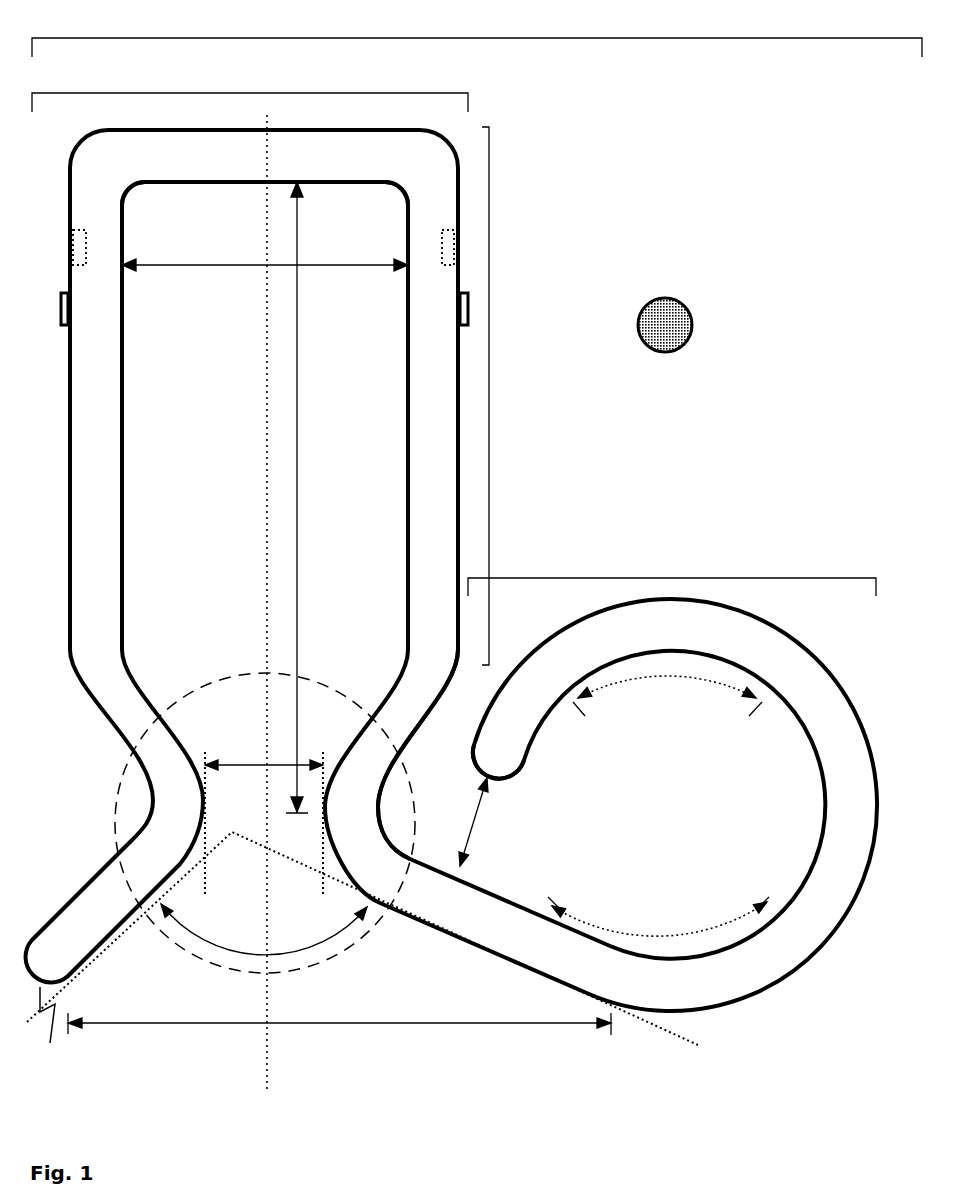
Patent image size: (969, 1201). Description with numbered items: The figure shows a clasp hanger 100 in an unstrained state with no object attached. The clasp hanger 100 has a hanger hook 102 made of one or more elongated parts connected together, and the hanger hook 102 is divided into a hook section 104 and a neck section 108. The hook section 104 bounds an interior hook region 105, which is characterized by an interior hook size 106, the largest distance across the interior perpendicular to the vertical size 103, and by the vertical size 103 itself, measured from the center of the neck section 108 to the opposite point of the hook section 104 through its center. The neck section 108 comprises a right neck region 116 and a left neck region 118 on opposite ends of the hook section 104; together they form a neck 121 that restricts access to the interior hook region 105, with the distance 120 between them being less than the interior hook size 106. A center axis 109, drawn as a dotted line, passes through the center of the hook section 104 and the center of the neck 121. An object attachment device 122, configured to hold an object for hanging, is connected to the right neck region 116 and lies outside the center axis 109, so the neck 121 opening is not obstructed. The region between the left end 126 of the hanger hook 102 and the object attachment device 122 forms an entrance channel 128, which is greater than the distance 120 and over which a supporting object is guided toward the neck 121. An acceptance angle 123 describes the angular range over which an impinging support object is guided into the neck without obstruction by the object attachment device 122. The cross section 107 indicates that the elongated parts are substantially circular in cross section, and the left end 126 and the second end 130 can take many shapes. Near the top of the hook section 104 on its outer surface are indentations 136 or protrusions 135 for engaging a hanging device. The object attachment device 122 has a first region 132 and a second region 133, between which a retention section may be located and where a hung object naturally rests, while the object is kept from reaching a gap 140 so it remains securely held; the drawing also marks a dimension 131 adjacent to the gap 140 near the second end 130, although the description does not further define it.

The clasp hanger 100 is at (518, 42).
The hanger hook 102 is at (340, 93).
The vertical size 103 is at (297, 480).
The hook section 104 is at (489, 422).
The interior hook region 105 is at (205, 339).
The interior hook size 106 is at (385, 262).
The cross section 107 is at (692, 318).
The neck section 108 is at (114, 818).
The center axis 109 is at (267, 407).
The right neck region 116 is at (372, 818).
The left neck region 118 is at (203, 814).
The distance 120 is at (270, 763).
The neck 121 is at (262, 814).
The object attachment device 122 is at (723, 578).
The acceptance angle 123 is at (168, 930).
The left end 126 is at (362, 952).
The entrance channel 128 is at (340, 1025).
The second end 130 is at (517, 772).
The hook opening gap 131 is at (490, 822).
The first region 132 is at (665, 679).
The second region 133 is at (700, 930).
The protrusions 135 is at (61, 312).
The indentations 136 is at (68, 248).
The gap 140 is at (476, 728).